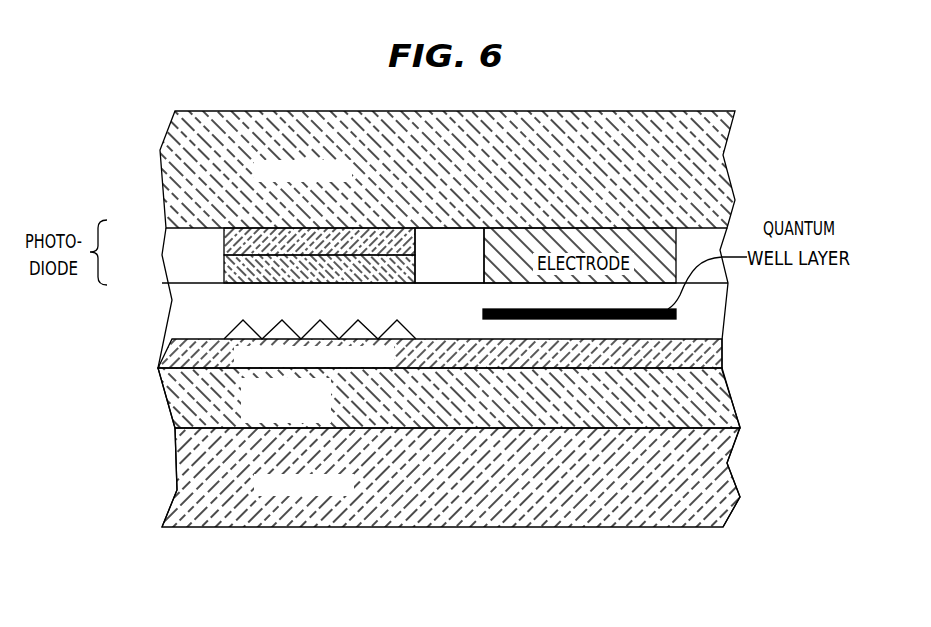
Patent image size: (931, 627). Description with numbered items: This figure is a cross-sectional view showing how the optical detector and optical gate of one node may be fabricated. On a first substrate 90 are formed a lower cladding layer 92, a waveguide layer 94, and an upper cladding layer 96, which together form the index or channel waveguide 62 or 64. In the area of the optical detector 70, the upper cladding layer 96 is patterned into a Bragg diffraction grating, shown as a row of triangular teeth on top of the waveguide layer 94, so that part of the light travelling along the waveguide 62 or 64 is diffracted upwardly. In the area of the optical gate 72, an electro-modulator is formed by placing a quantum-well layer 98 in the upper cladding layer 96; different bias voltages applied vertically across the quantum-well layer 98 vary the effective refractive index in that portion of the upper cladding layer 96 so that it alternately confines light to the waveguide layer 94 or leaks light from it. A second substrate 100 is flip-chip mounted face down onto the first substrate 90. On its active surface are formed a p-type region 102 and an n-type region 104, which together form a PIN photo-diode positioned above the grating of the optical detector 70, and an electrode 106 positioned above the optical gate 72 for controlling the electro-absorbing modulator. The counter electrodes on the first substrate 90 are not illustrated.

The second substrate 100 is at (720, 180).
The n-type region 104 is at (224, 241).
The p-type region 102 is at (224, 262).
The electrode 106 is at (505, 262).
The upper cladding layer 96 is at (723, 300).
The quantum-well layer 98 is at (676, 314).
The waveguide layer 94 is at (722, 352).
The lower cladding layer 92 is at (728, 402).
The first substrate 90 is at (723, 468).
The channel waveguide 62 is at (860, 360).
The channel waveguide 64 is at (810, 282).
The optical detector 70 is at (413, 560).
The optical gate 72 is at (675, 562).